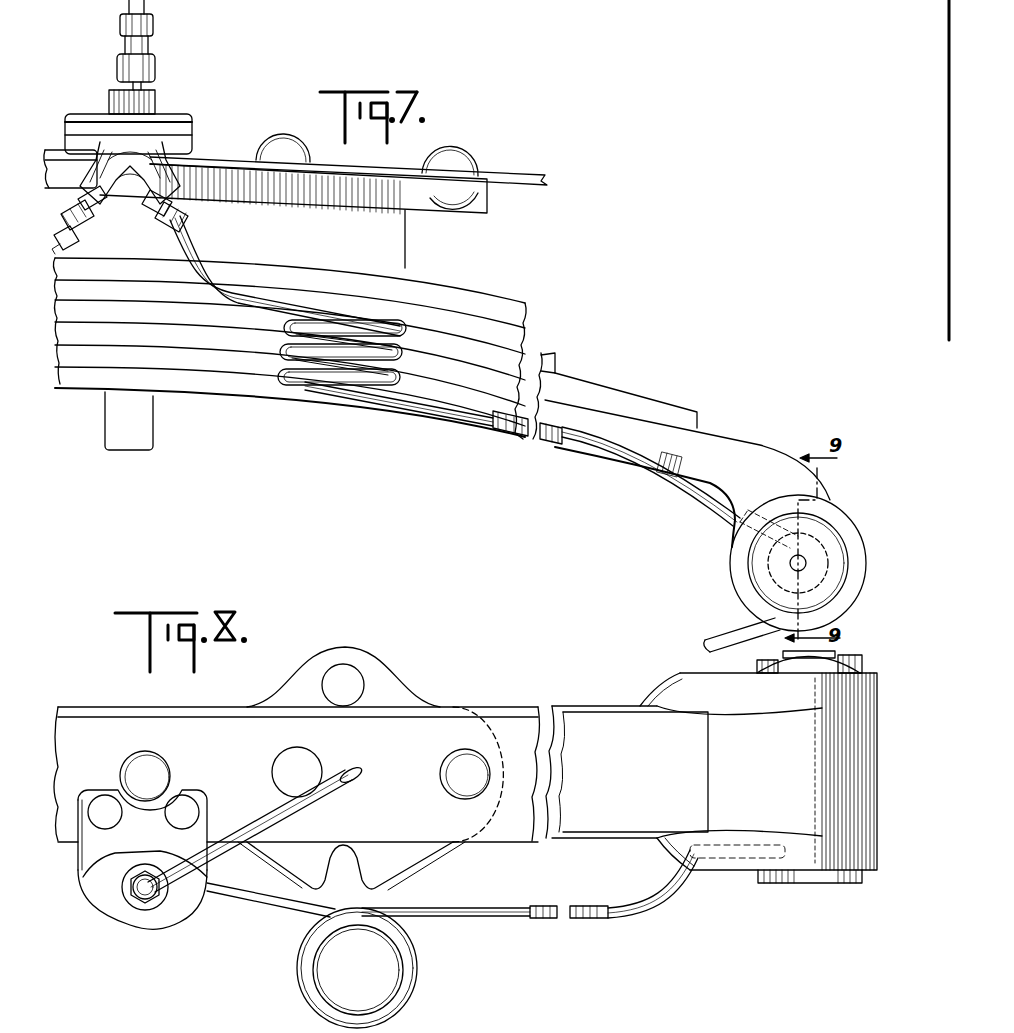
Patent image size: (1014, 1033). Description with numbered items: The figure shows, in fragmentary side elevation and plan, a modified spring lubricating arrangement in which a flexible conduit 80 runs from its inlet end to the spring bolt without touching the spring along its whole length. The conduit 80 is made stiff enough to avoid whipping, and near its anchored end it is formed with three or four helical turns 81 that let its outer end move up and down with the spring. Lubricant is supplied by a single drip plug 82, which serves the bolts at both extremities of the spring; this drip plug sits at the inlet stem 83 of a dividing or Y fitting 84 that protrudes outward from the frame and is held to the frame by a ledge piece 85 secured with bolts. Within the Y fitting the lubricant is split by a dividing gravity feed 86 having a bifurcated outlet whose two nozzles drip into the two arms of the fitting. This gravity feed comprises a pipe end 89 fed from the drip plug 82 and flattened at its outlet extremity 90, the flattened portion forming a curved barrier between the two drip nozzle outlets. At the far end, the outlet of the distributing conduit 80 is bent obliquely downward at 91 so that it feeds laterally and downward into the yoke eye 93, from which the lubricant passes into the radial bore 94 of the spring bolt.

In FIG. 7, the flexible conduit 80 is at (473, 423).
In FIG. 8, the flexible conduit 80 is at (501, 922).
In FIG. 7, the helical turns 81 is at (338, 290).
In FIG. 8, the helical turns 81 is at (318, 944).
In FIG. 7, the drip plug 82 is at (152, 68).
In FIG. 7, the inlet stem 83 is at (155, 104).
In FIG. 8, the inlet stem 83 is at (137, 910).
In FIG. 7, the dividing or Y fitting 84 is at (123, 203).
In FIG. 7, the ledge piece 85 is at (57, 135).
In FIG. 8, the ledge piece 85 is at (198, 833).
In FIG. 7, the dividing gravity feed 86 is at (141, 203).
In FIG. 7, the pipe end 89 is at (148, 150).
In FIG. 7, the flattened outlet extremity 90 is at (142, 160).
In FIG. 7, the obliquely bent outlet end 91 is at (716, 520).
In FIG. 8, the obliquely bent outlet end 91 is at (668, 888).
In FIG. 7, the yoke eye 93 is at (855, 522).
In FIG. 8, the yoke eye 93 is at (875, 878).
In FIG. 7, the radial bore 94 is at (763, 563).